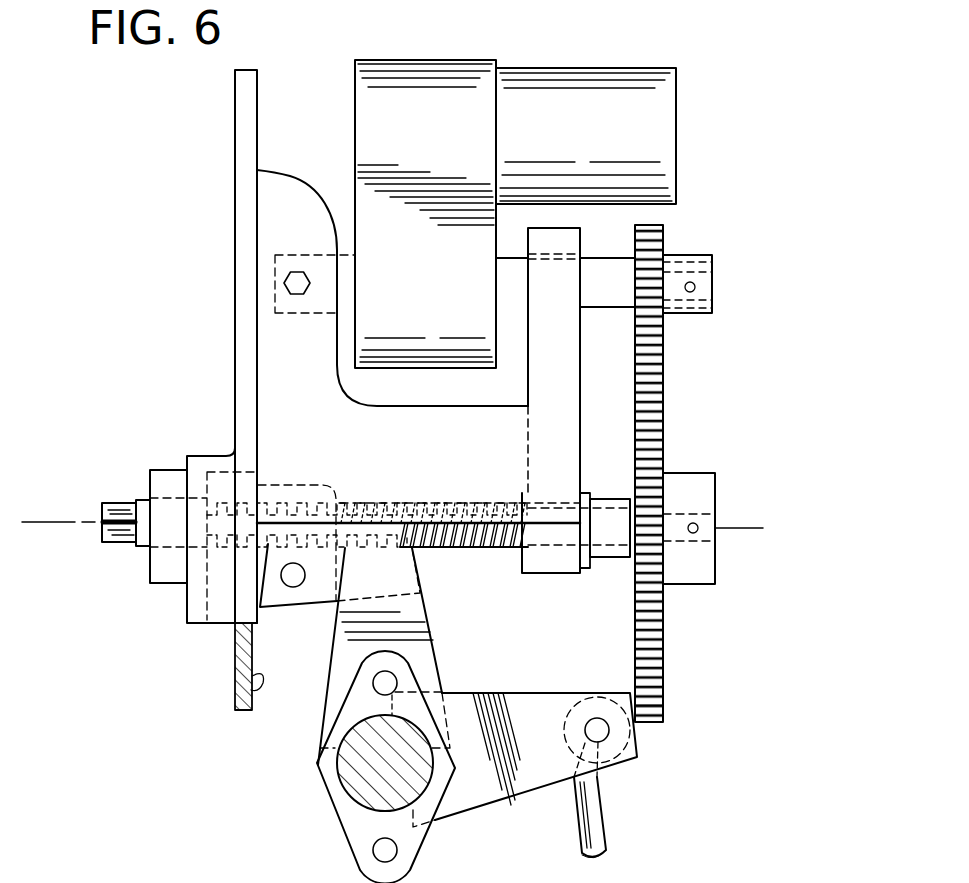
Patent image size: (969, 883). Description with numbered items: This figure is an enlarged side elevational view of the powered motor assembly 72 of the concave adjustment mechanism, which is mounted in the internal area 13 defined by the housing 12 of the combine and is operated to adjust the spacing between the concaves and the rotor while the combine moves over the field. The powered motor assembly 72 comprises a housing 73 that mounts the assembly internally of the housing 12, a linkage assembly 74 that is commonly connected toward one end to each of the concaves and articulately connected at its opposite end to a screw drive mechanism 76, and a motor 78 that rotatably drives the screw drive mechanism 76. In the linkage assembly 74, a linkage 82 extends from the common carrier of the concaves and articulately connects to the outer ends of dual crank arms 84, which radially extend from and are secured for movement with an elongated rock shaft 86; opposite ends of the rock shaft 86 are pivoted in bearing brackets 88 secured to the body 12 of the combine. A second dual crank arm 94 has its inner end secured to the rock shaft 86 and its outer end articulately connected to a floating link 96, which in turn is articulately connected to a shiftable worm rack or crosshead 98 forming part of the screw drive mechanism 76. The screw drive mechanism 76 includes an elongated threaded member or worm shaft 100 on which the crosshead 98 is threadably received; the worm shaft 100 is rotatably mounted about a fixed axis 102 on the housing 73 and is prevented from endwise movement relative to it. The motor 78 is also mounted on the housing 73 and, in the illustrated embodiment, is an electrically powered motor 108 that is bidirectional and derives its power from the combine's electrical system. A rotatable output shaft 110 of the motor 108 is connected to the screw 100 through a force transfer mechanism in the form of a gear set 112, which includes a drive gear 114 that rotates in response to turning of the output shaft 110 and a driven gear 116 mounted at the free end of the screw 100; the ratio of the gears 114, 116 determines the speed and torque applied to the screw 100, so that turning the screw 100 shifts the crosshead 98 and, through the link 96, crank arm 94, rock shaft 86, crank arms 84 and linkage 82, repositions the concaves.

The housing 12 is at (235, 665).
The internal area 13 is at (252, 690).
The powered motor assembly 72 is at (748, 186).
The housing 73 is at (245, 366).
The linkage assembly 74 is at (584, 826).
The screw drive mechanism 76 is at (467, 562).
The motor 78 is at (427, 54).
The linkage 82 is at (590, 810).
The crank arms 84 is at (535, 712).
The rock shaft 86 is at (373, 768).
The bearing brackets 88 is at (348, 848).
The second dual crank arm 94 is at (345, 675).
The floating link 96 is at (310, 585).
The crosshead 98 is at (330, 485).
The worm shaft 100 is at (500, 548).
The fixed axis 102 is at (741, 530).
The electrically powered motor 108 is at (441, 141).
The output shaft 110 is at (603, 515).
The gear set 112 is at (663, 405).
The drive gear 114 is at (663, 253).
The driven gear 116 is at (663, 650).